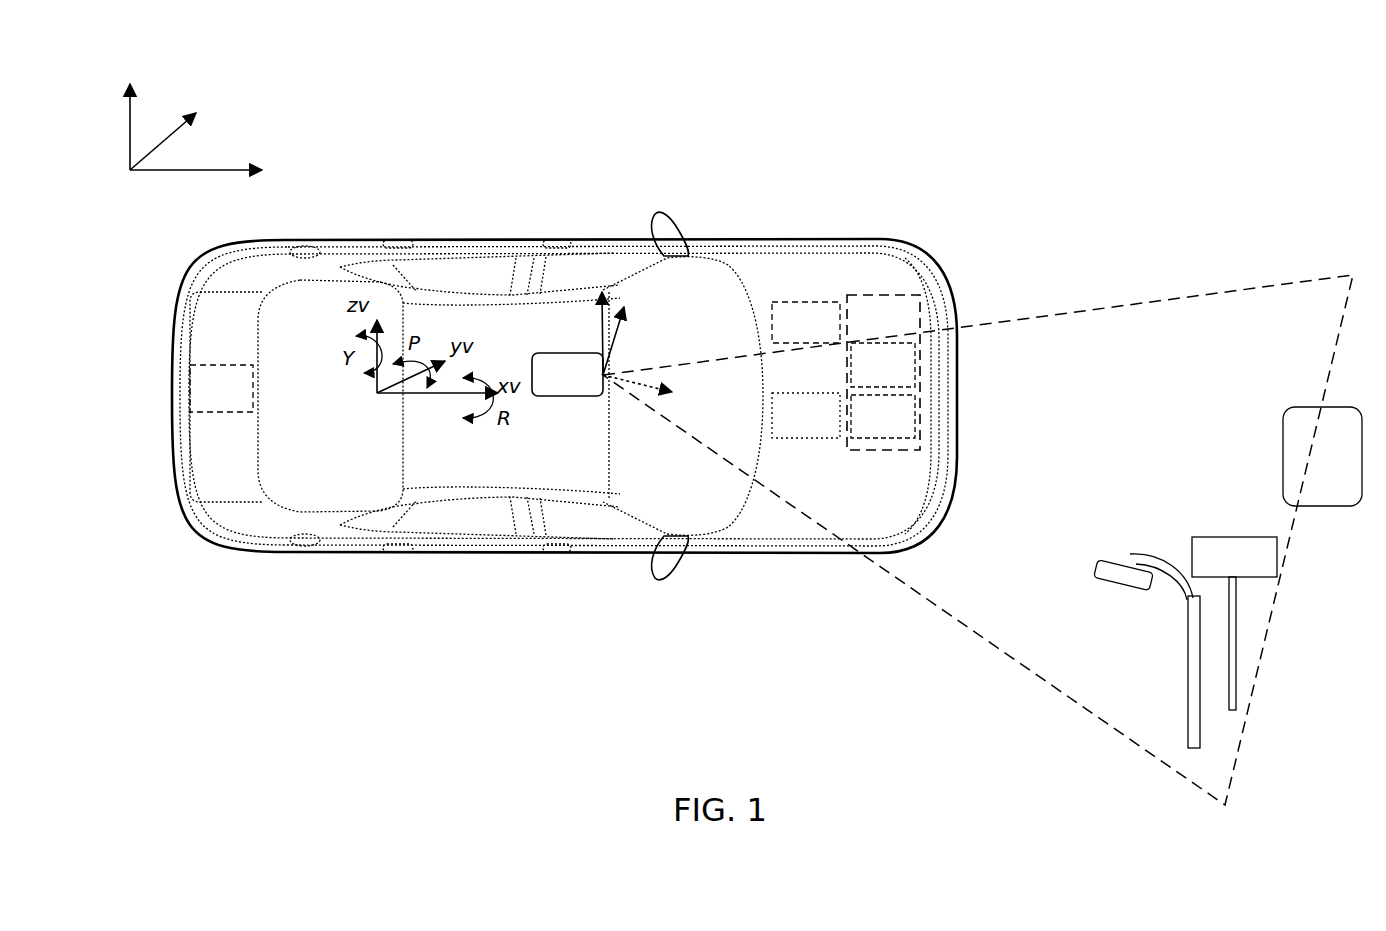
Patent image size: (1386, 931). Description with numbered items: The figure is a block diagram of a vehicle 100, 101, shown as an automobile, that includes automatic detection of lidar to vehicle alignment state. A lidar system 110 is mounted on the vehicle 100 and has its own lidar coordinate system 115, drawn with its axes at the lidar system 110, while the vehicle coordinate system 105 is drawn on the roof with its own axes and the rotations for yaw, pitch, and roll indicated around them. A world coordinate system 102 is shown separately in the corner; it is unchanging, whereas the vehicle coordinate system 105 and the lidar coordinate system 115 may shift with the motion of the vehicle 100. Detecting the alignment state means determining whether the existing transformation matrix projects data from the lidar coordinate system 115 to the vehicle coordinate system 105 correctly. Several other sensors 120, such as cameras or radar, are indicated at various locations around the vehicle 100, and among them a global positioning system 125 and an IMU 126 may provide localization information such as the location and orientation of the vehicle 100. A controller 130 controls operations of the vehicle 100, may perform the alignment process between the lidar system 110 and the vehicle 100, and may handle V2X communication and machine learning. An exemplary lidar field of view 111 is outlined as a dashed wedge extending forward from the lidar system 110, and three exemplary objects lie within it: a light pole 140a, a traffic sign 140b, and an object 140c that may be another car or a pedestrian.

The vehicle 100 is at (564, 386).
The vehicle body 101 is at (564, 386).
The world coordinate system 102 is at (229, 119).
The vehicle coordinate system 105 is at (457, 321).
The lidar system 110 is at (587, 389).
The lidar field of view 111 is at (935, 582).
The lidar coordinate system 115 is at (670, 334).
The other sensors 120 is at (242, 404).
The global positioning system 125 is at (883, 365).
The IMU 126 is at (883, 416).
The controller 130 is at (827, 430).
The light pole 140a is at (1156, 556).
The traffic sign 140b is at (1226, 537).
The object 140c is at (1322, 456).